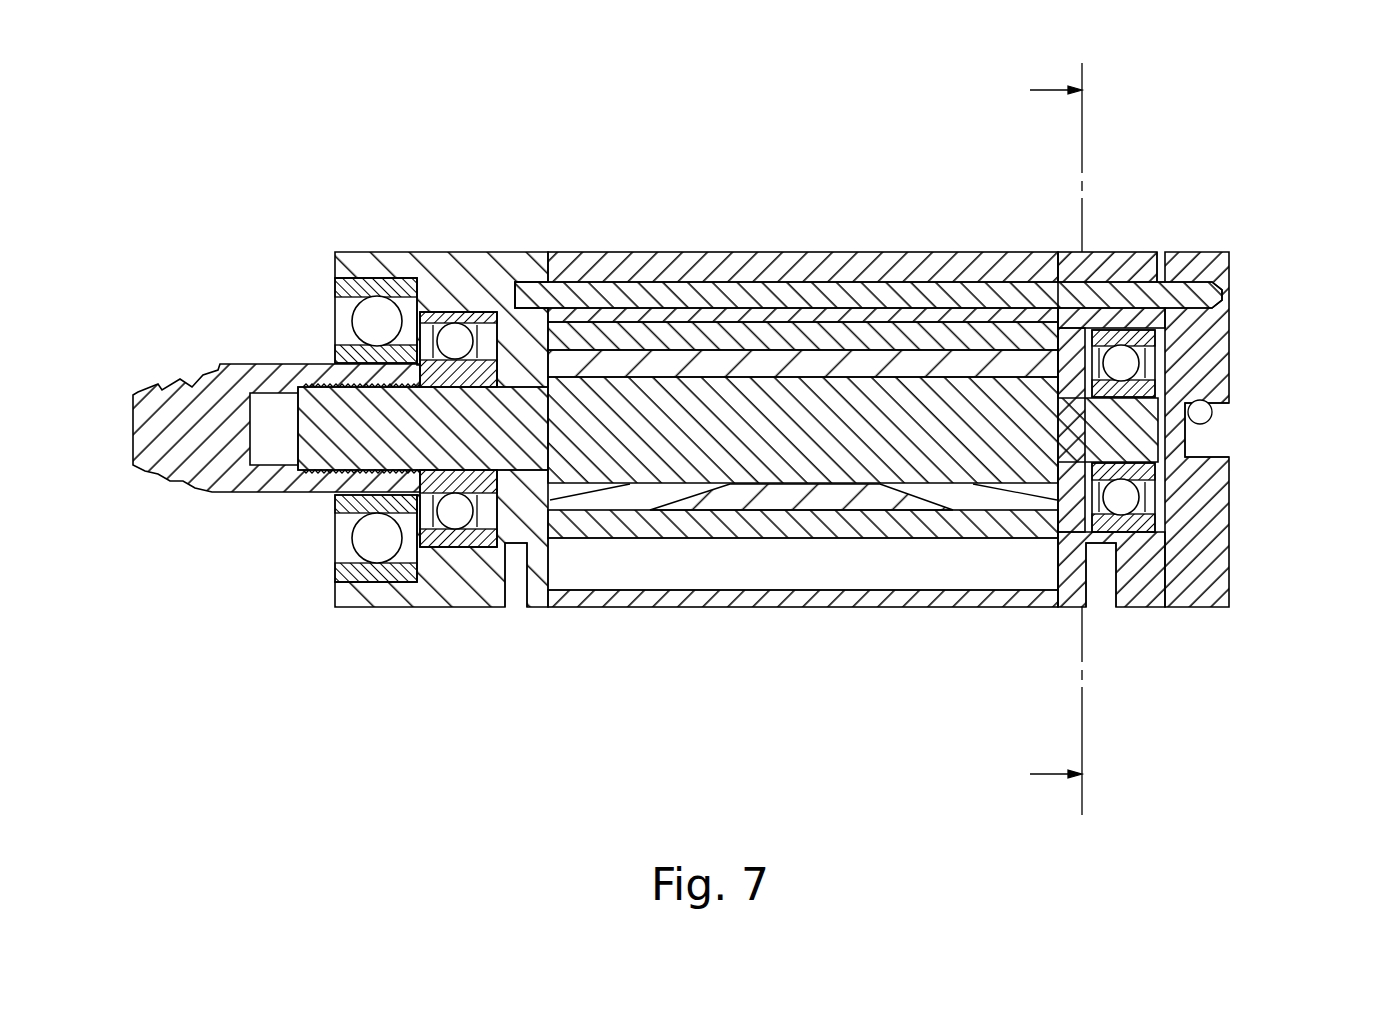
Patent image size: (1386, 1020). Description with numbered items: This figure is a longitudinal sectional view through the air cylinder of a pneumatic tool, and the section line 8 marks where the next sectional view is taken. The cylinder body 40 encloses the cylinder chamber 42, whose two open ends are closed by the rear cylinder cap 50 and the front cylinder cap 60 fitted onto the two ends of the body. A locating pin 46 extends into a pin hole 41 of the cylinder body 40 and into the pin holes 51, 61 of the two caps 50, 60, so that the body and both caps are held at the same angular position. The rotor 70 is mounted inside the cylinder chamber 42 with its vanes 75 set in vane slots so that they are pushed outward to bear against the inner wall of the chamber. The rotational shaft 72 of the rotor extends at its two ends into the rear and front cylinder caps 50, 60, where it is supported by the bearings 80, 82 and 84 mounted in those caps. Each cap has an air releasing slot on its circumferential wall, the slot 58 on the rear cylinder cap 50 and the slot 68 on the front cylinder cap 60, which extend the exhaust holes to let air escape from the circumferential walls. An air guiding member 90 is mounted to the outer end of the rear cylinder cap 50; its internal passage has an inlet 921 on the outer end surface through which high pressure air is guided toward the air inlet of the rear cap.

The section line 8- 8 is at (1053, 429).
The cylinder body 40 is at (972, 600).
The pin hole 41 is at (703, 283).
The cylinder chamber 42 is at (868, 567).
The locating pin 46 is at (837, 290).
The rear cylinder cap 50 is at (1135, 595).
The pin hole 51 is at (1108, 270).
The air releasing slot 58 is at (1099, 599).
The front cylinder cap 60 is at (458, 590).
The pin hole 61 is at (528, 283).
The air releasing slot 68 is at (515, 600).
The rotor 70 is at (673, 457).
The rotational shaft 72 is at (305, 465).
The vane 75 is at (773, 495).
The bearing 80 is at (1155, 351).
The bearing 82 is at (433, 310).
The bearing 84 is at (335, 290).
The air guiding member 90 is at (1225, 548).
The inlet 921 is at (1212, 440).